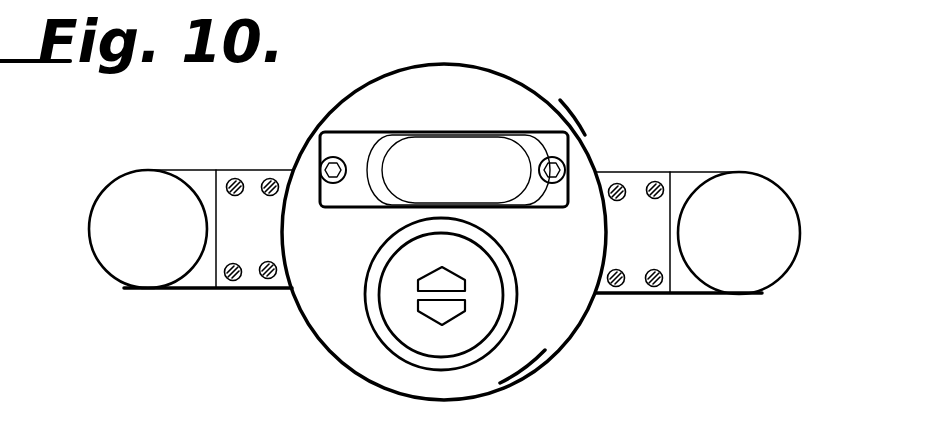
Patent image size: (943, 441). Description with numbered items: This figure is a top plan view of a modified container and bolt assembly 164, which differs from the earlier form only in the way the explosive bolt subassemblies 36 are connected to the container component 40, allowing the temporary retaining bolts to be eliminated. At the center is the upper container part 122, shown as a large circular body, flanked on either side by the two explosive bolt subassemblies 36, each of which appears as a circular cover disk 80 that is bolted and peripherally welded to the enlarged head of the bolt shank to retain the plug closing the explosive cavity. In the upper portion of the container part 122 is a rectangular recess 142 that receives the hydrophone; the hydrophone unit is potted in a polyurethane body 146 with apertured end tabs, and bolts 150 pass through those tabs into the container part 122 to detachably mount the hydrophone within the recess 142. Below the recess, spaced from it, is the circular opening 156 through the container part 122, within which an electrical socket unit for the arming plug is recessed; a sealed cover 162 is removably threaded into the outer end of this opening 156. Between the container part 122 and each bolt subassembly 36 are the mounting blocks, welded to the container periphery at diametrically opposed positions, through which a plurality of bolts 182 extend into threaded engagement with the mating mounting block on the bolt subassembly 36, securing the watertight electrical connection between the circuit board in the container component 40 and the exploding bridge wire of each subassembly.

The explosive bolt subassembly 36 is at (118, 175).
The container component 40 is at (536, 89).
The cover disk 80 is at (128, 273).
The upper container part 122 is at (535, 366).
The recess 142 is at (446, 118).
The polyurethane body 146 is at (488, 195).
The bolts 150 is at (335, 156).
The circular opening 156 is at (392, 241).
The sealed cover 162 is at (495, 297).
The assembly 164 is at (571, 117).
The bolts 182 is at (233, 281).